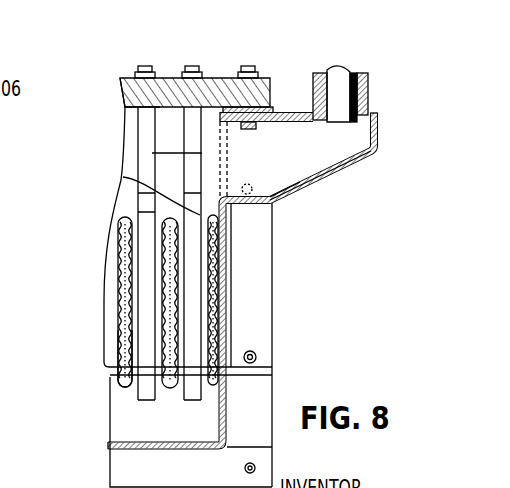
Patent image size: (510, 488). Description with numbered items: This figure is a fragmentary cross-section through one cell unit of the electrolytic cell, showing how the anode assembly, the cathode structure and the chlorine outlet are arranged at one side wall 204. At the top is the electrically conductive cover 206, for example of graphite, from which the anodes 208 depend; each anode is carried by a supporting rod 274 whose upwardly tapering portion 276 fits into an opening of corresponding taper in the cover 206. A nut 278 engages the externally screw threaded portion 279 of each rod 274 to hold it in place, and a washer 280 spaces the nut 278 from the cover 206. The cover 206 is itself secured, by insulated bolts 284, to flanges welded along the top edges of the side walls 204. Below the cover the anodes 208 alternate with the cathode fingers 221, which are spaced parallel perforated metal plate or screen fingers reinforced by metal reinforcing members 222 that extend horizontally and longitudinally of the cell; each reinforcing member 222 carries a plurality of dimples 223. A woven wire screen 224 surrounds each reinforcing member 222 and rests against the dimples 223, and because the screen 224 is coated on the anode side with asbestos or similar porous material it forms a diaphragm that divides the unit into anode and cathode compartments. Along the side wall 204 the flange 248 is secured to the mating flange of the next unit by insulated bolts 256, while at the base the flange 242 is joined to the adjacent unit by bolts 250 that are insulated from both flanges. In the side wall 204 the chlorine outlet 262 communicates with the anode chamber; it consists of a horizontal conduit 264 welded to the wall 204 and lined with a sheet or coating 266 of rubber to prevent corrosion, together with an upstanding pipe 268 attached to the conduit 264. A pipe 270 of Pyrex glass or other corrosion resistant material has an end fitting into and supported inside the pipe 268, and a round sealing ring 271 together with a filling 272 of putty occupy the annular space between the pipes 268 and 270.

The side walls 204 is at (232, 263).
The electrically conductive cover 206 is at (121, 78).
The anodes 208 is at (123, 175).
The cathode fingers 221 is at (118, 307).
The reinforcing members 222 is at (118, 260).
The dimples 223 is at (120, 337).
The woven wire screens 224 is at (125, 218).
The flange 242 is at (108, 477).
The flange 248 is at (270, 365).
The bolts 250 is at (256, 468).
The insulated bolts 256 is at (257, 353).
The outlet 262 is at (284, 193).
The horizontal conduit 264 is at (292, 112).
The sheet or coating 266 is at (307, 178).
The upstanding pipe 268 is at (318, 76).
The pipe 270 is at (338, 66).
The round sealing ring 271 is at (350, 112).
The filling 272 is at (363, 73).
The supporting rods 274 is at (203, 171).
The upwardly tapering portions 276 is at (130, 110).
The nuts 278 is at (182, 69).
The externally screw threaded portions 279 is at (208, 66).
The washers 280 is at (207, 75).
The insulated bolts 284 is at (260, 59).